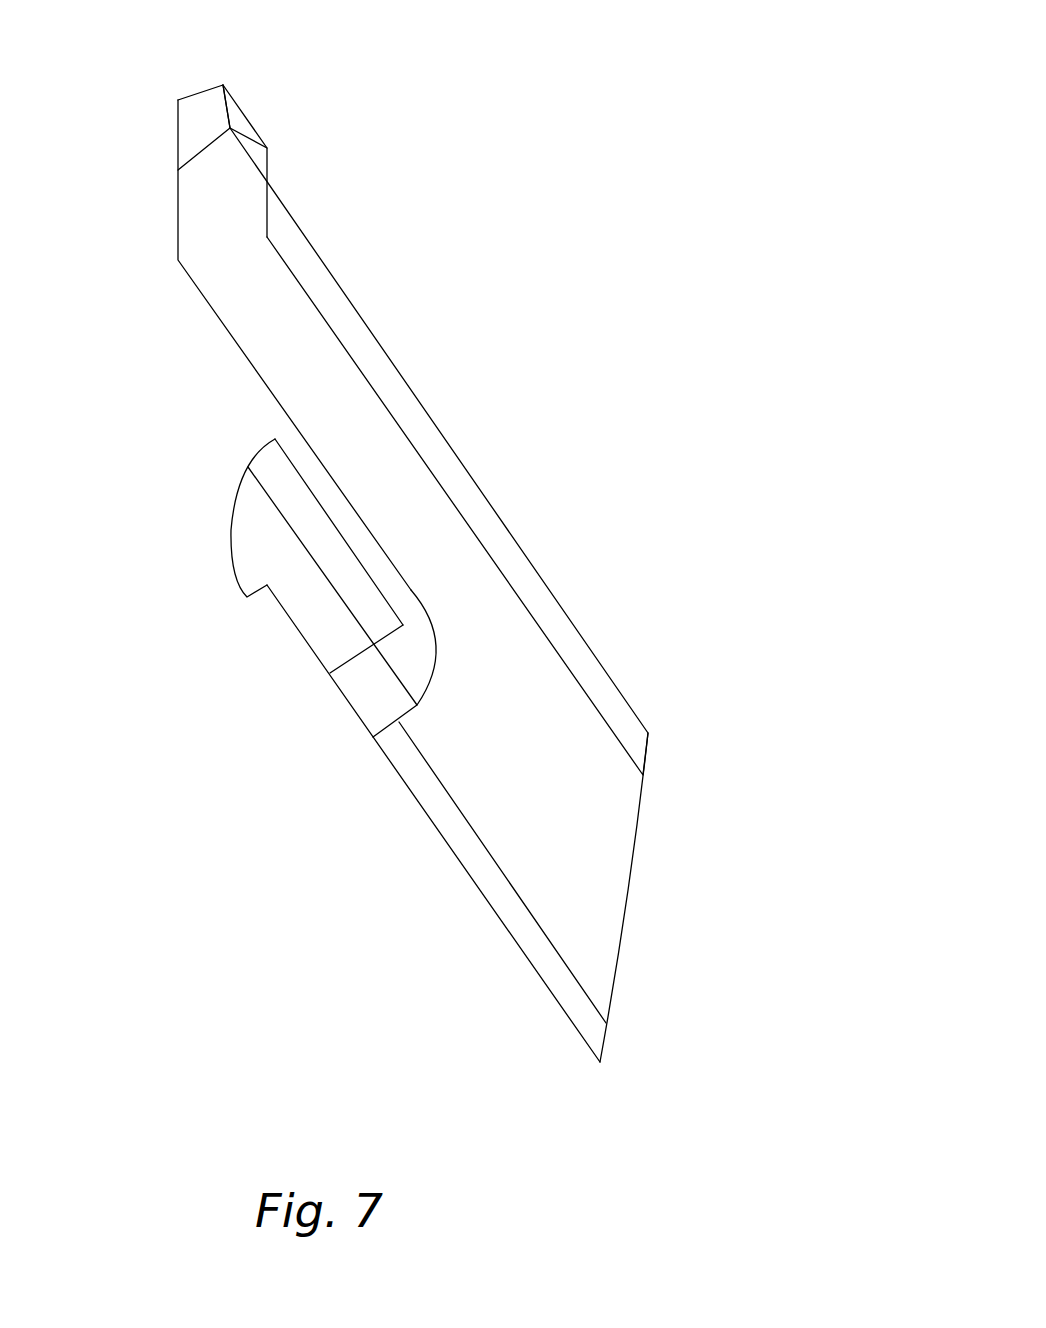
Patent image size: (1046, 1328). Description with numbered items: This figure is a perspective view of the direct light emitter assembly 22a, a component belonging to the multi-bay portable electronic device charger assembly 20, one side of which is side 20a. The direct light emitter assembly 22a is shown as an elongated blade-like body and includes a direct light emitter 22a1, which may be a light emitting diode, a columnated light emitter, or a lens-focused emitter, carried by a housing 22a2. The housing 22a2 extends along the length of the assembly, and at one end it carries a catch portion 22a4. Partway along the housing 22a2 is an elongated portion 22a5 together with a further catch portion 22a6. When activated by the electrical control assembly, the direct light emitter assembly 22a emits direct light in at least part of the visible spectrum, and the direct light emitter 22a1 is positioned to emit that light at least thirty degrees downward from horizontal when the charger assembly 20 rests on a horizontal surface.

The multi-bay portable electronic device charger assembly 20 is at (593, 65).
The side 20a is at (572, 286).
The direct light emitter assembly 22a is at (487, 438).
The direct light emitter 22a1 is at (633, 852).
The housing 22a2 is at (598, 683).
The catch portion 22a4 is at (247, 135).
The elongated portion 22a5 is at (317, 657).
The catch portion 22a6 is at (235, 515).